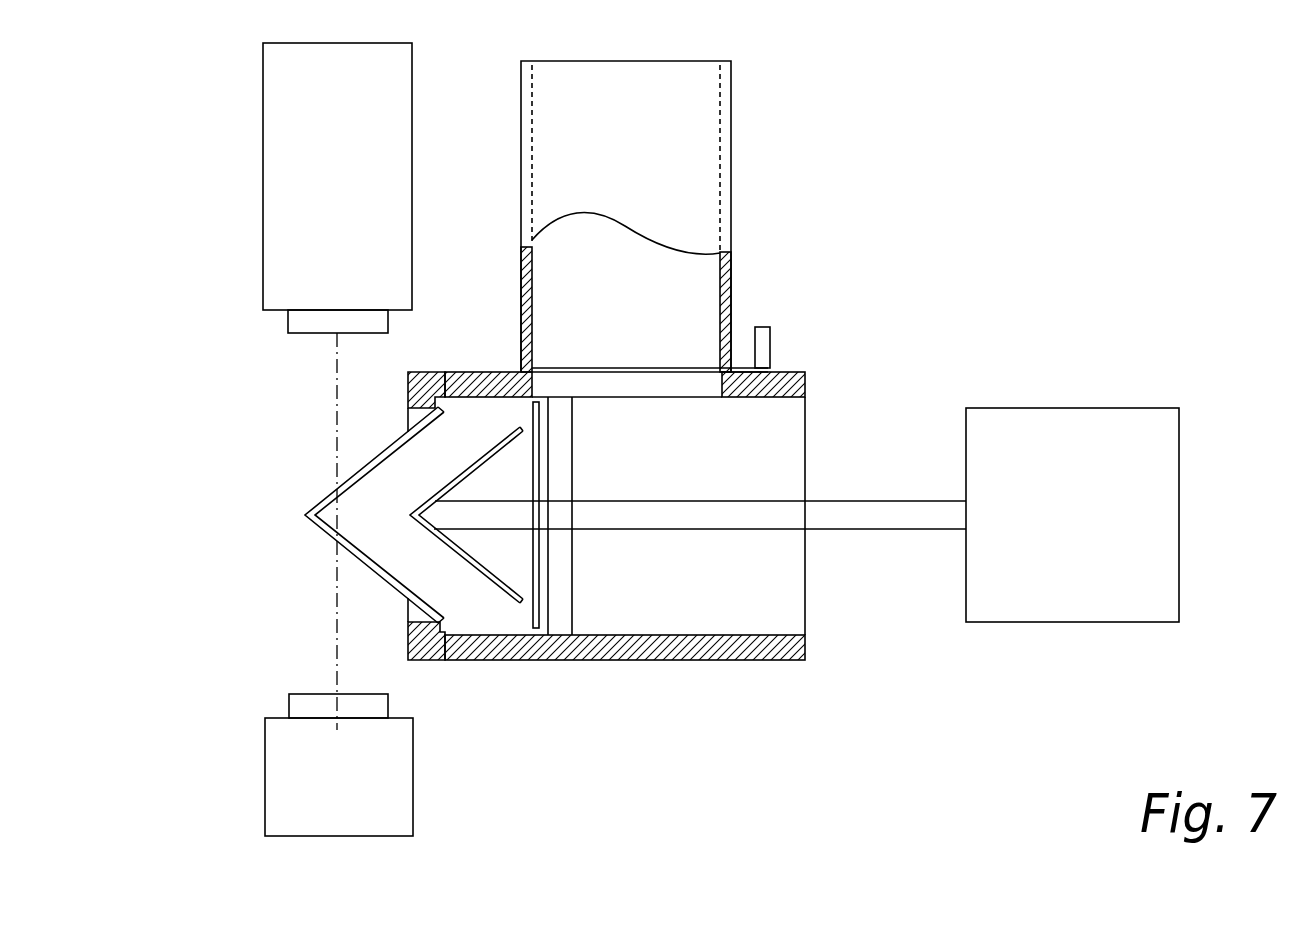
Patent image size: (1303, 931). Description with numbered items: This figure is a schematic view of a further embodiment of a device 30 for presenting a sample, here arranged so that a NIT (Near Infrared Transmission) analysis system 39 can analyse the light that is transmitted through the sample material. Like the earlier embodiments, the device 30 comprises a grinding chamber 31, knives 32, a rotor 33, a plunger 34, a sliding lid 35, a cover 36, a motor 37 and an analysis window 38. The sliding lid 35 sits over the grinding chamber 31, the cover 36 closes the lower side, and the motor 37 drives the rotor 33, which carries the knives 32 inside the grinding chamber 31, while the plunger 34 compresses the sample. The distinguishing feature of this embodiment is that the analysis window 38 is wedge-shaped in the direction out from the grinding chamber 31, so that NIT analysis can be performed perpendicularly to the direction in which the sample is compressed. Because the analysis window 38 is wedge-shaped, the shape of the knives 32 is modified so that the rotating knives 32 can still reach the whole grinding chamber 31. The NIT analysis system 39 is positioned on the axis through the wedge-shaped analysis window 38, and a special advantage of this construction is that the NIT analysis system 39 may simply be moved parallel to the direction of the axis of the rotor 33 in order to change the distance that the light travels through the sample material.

The device 30 is at (882, 246).
The grinding chamber 31 is at (633, 487).
The knives 32 is at (537, 490).
The rotor 33 is at (695, 530).
The plunger 34 is at (573, 412).
The sliding lid 35 is at (603, 368).
The cover 36 is at (433, 660).
The motor 37 is at (1070, 408).
The analysis window 38 is at (316, 526).
The NIT analysis system 39 is at (263, 222).